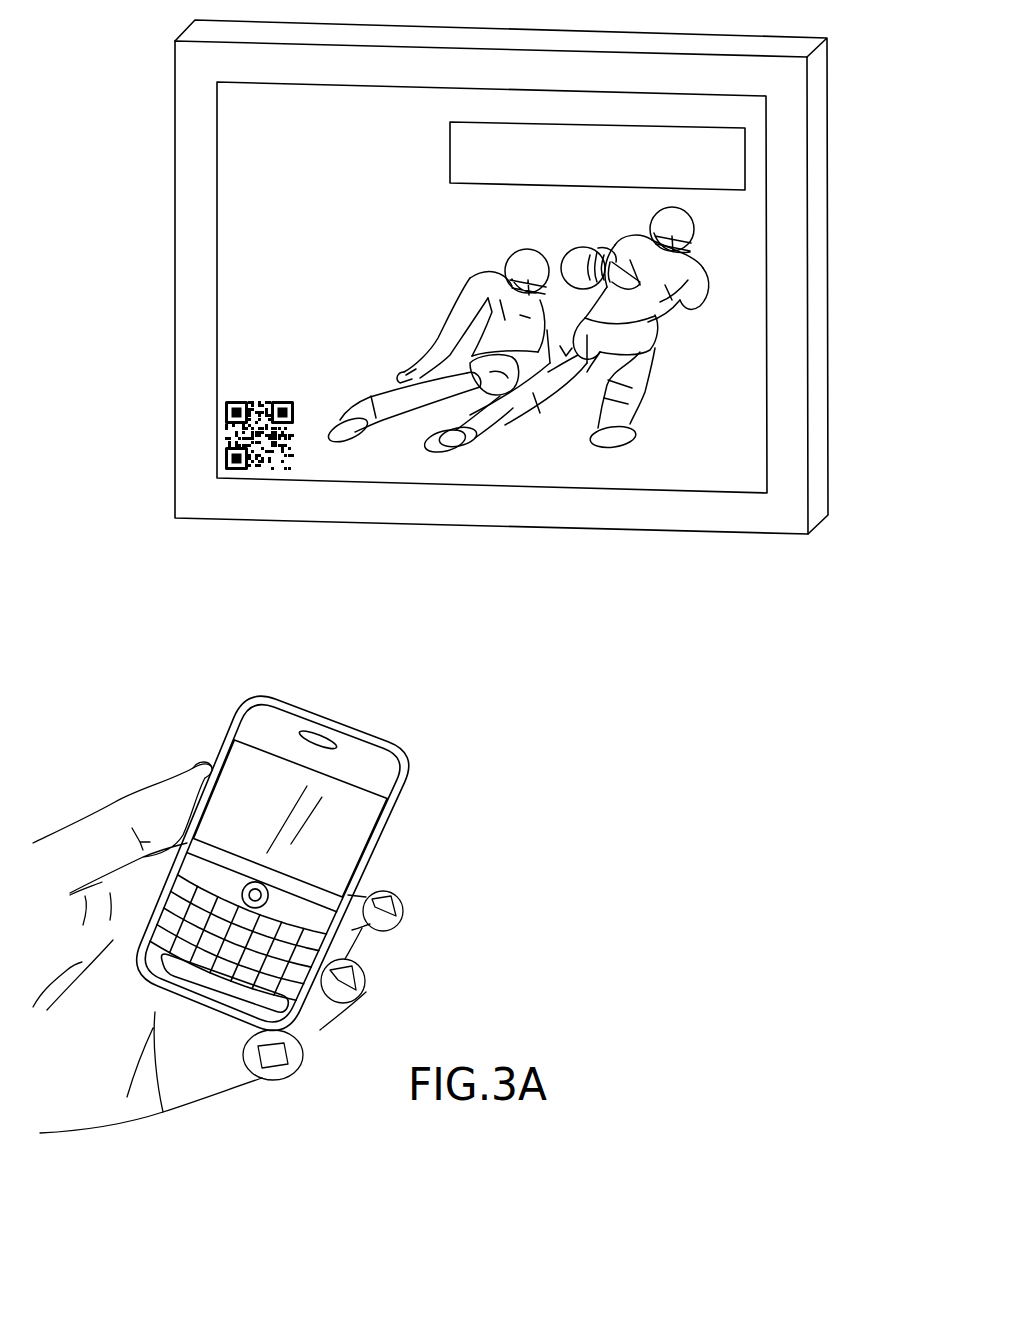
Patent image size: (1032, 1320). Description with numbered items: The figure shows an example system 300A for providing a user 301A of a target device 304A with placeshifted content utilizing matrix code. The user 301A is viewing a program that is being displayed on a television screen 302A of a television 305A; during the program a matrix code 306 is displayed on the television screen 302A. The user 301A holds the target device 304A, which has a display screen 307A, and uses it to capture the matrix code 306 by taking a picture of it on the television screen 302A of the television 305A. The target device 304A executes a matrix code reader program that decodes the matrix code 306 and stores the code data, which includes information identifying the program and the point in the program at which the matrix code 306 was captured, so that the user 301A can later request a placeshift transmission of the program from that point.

The system 300A is at (664, 896).
The user 301A is at (60, 826).
The television screen 302A is at (237, 197).
The target device 304A is at (232, 725).
The television 305A is at (176, 91).
The matrix code 306 is at (233, 430).
The mobile device display 307A is at (363, 814).